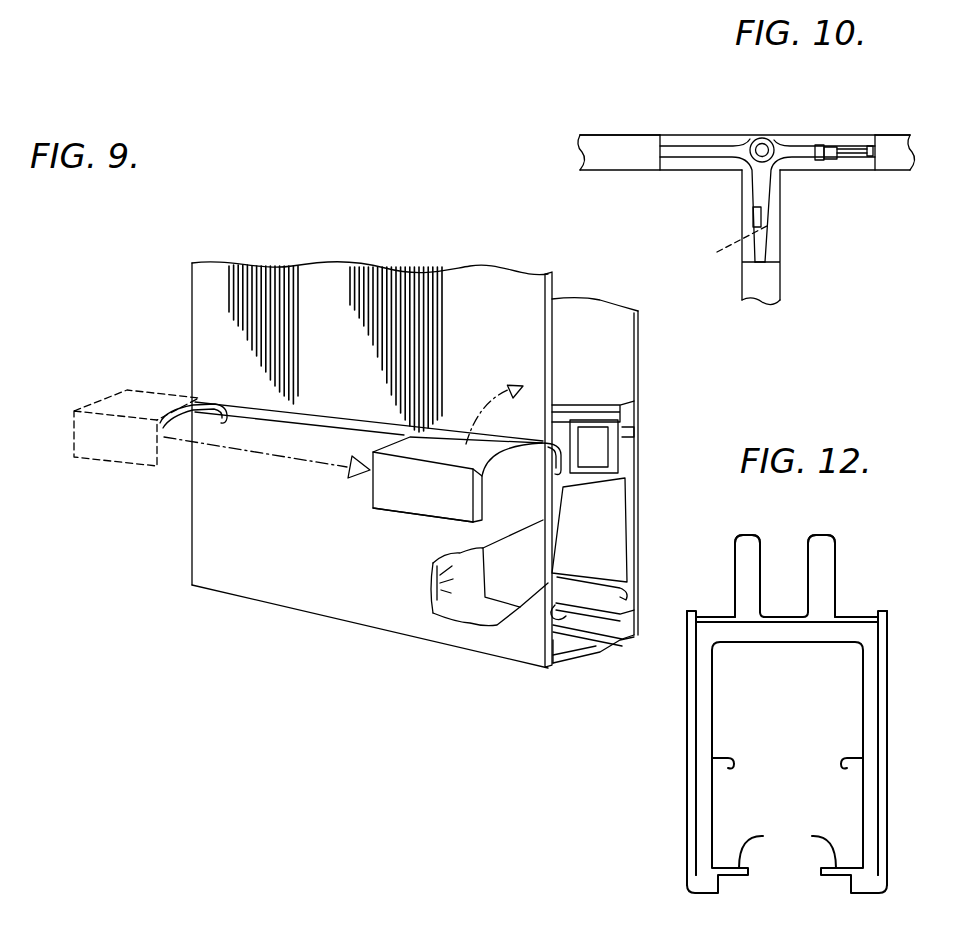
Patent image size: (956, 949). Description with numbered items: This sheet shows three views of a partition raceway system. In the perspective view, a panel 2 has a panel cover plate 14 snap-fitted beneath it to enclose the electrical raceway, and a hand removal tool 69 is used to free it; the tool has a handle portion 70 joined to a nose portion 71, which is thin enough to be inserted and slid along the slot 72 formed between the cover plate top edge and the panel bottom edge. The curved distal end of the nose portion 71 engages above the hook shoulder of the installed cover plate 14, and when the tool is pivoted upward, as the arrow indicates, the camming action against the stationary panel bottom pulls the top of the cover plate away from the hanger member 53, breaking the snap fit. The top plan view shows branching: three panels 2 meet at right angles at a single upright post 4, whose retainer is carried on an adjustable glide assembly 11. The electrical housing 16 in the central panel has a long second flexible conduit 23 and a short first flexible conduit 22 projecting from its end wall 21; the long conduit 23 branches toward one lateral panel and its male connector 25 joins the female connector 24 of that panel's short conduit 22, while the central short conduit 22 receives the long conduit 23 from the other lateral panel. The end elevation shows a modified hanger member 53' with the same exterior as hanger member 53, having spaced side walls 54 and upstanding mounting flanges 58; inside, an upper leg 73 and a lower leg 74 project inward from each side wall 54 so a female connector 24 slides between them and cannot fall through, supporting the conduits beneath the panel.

In FIG. 9, the panel 2 is at (503, 276).
In FIG. 10, the panel 2 is at (653, 170).
In FIG. 10, the upright post 4 is at (745, 132).
In FIG. 10, the adjustable glide assembly 11 is at (770, 125).
In FIG. 9, the panel cover plate 14 is at (364, 603).
In FIG. 10, the electrical housing 16 is at (635, 148).
In FIG. 10, the housing end wall 21 is at (772, 257).
In FIG. 10, the first flexible conduit 22 is at (857, 145).
In FIG. 10, the second flexible conduit 23 is at (710, 148).
In FIG. 10, the female connector 24 is at (827, 160).
In FIG. 10, the male connector 25 is at (818, 145).
In FIG. 9, the hanger member 53 is at (613, 480).
In FIG. 12, the modified hanger member 53' is at (744, 714).
In FIG. 12, the side wall 54 is at (696, 693).
In FIG. 12, the upstanding flange 58 is at (819, 550).
In FIG. 9, the hand removal tool 69 is at (412, 521).
In FIG. 9, the handle portion 70 is at (374, 498).
In FIG. 9, the nose portion 71 is at (556, 459).
In FIG. 9, the slot 72 is at (381, 423).
In FIG. 12, the upper leg 73 is at (843, 767).
In FIG. 12, the lower leg 74 is at (787, 840).